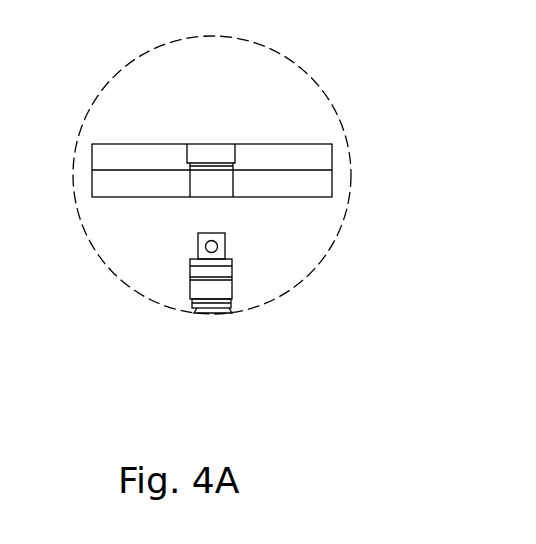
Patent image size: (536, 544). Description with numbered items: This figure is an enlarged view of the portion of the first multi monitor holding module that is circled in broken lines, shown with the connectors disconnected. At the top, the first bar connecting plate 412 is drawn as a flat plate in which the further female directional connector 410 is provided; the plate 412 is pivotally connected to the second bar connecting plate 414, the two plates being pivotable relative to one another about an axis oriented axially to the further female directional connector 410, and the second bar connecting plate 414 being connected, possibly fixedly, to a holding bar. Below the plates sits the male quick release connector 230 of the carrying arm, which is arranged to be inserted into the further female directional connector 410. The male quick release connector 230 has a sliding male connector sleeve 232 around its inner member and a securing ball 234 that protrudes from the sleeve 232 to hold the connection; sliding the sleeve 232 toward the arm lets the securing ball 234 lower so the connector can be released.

The male quick release connector 230 is at (235, 295).
The sliding male connector sleeve 232 is at (232, 293).
The securing ball 234 is at (218, 247).
The further female directional connector 410 is at (212, 153).
The first bar connecting plate 412 is at (313, 184).
The second bar connecting plate 414 is at (285, 144).